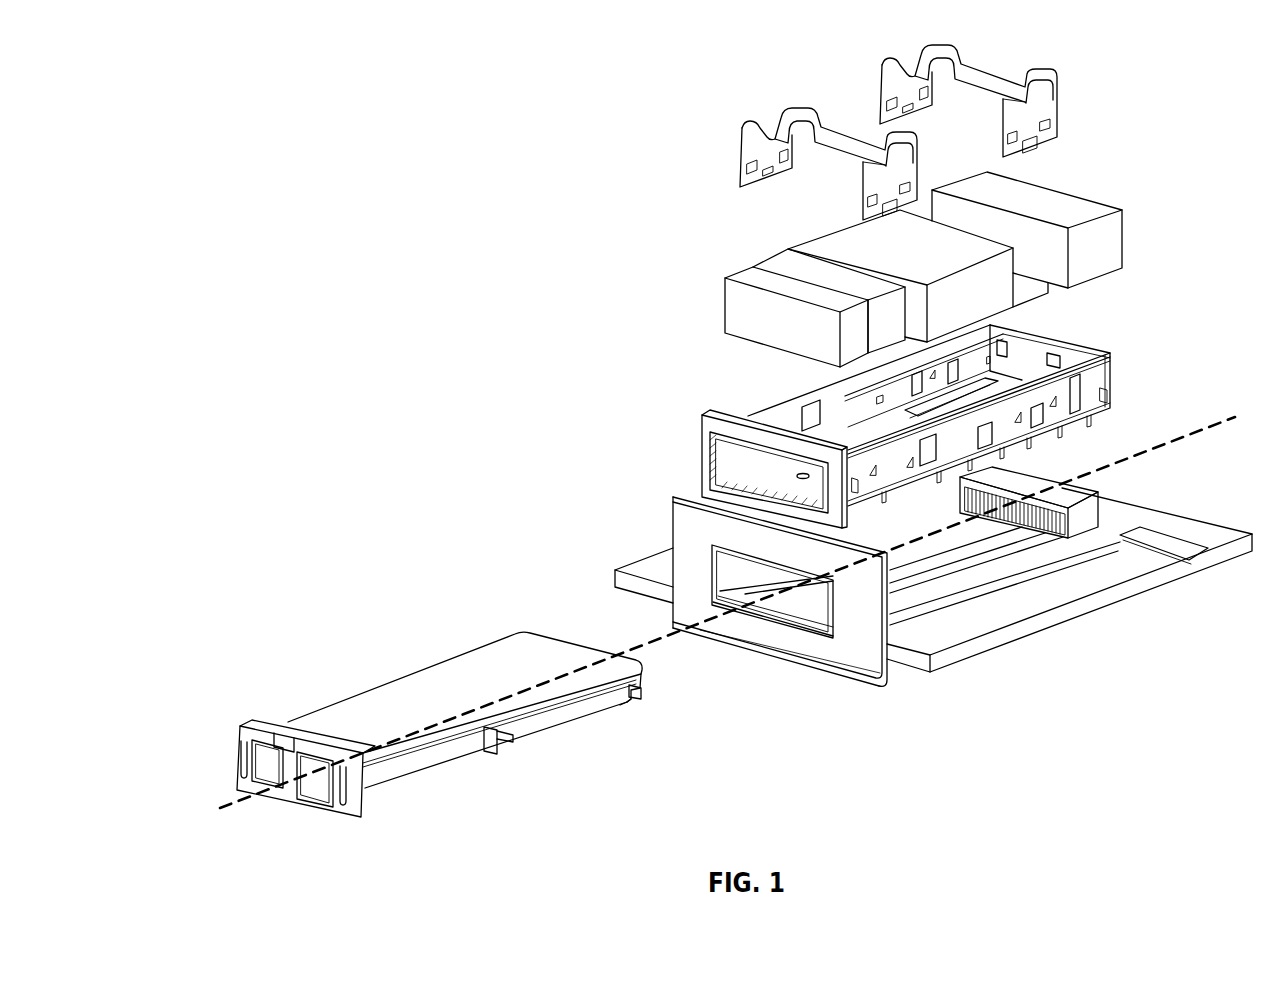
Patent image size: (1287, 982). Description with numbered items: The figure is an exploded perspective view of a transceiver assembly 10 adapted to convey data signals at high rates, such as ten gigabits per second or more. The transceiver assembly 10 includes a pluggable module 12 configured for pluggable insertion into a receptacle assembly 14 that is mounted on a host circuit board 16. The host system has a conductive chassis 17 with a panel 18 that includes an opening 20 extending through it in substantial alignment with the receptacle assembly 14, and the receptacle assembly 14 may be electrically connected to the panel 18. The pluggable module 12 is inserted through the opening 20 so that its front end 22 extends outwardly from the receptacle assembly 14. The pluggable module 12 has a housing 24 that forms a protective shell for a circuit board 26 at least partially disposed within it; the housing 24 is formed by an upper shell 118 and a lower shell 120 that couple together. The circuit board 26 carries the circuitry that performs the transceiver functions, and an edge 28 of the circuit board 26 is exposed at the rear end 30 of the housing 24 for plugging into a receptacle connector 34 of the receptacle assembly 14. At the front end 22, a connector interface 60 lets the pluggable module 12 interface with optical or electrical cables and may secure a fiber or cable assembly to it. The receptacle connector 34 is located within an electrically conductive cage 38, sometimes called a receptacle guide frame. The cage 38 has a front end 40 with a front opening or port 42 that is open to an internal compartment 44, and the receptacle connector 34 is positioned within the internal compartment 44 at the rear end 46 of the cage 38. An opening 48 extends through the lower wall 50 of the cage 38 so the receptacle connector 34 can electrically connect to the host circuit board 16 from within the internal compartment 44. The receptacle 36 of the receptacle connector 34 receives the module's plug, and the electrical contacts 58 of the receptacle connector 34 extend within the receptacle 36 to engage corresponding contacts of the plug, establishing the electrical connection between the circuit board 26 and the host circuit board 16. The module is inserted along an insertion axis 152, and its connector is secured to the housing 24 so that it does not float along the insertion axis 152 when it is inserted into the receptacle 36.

The transceiver assembly 10 is at (385, 250).
The pluggable module 12 is at (378, 678).
The receptacle assembly 14 is at (700, 340).
The host circuit board 16 is at (1077, 607).
The conductive chassis 17 is at (913, 687).
The panel 18 is at (867, 643).
The opening 20 is at (827, 617).
The front end 22 is at (243, 715).
The housing 24 is at (530, 732).
The circuit board 26 is at (645, 684).
The edge 28 is at (633, 697).
The rear end 30 is at (513, 628).
The receptacle connector 34 is at (1087, 513).
The receptacle 36 is at (1047, 520).
The cage 38 is at (1092, 377).
The front end 40 is at (697, 468).
The front opening 42 is at (738, 463).
The internal compartment 44 is at (840, 403).
The rear end 46 is at (1082, 346).
The opening 48 is at (987, 380).
The lower wall 50 is at (866, 434).
The electrical contacts 58 is at (1023, 500).
The connector interface 60 is at (312, 790).
The upper shell 118 is at (437, 673).
The lower shell 120 is at (395, 785).
The insertion axis 152 is at (243, 803).